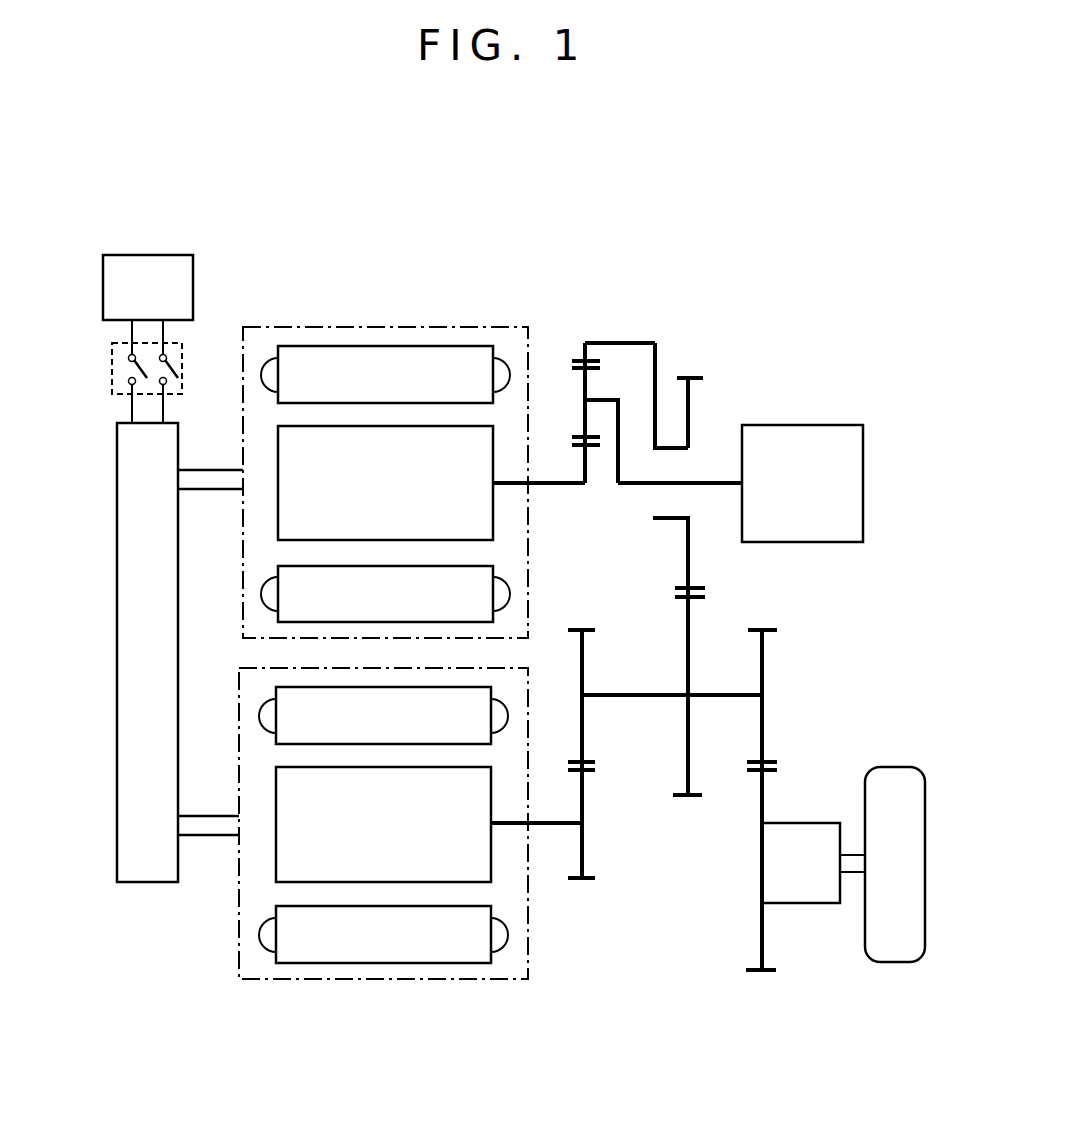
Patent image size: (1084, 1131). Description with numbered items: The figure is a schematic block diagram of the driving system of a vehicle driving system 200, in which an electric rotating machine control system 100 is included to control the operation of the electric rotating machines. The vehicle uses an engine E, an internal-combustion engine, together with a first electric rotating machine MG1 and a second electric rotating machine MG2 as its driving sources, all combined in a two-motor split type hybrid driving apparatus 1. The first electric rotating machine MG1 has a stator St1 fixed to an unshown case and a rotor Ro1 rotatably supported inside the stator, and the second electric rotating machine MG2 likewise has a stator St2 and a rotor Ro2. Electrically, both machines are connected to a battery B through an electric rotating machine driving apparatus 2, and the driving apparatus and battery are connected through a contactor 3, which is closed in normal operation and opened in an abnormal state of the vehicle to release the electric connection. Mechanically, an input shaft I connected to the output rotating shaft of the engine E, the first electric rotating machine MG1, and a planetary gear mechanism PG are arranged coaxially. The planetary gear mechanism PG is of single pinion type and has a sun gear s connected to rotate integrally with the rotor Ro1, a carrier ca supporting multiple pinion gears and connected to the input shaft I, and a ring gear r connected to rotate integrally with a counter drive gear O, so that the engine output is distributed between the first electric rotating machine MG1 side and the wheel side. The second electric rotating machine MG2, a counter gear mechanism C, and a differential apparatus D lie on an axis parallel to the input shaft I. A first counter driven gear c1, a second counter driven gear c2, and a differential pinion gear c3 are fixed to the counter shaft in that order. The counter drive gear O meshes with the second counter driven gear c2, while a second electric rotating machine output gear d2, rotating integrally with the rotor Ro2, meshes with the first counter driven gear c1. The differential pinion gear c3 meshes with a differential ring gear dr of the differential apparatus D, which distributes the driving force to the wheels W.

The hybrid driving apparatus 1 is at (772, 307).
The electric rotating machine driving apparatus 2 is at (117, 515).
The contactor 3 is at (110, 368).
The battery B is at (130, 253).
The vehicle driving system 200 is at (222, 282).
The electric rotating machine control system 100 is at (295, 194).
The first electric rotating machine MG1 is at (415, 327).
The stator St1 is at (368, 350).
The rotor Ro1 is at (287, 455).
The second electric rotating machine MG2 is at (353, 982).
The stator St2 is at (293, 700).
The rotor Ro2 is at (282, 787).
The planetary gear mechanism PG is at (585, 322).
The ring gear r is at (585, 355).
The sun gear s is at (580, 452).
The carrier ca is at (612, 400).
The counter drive gear O is at (690, 402).
The input shaft I is at (707, 481).
The engine E is at (840, 423).
The first counter driven gear c1 is at (582, 660).
The second counter driven gear c2 is at (685, 645).
The differential pinion gear c3 is at (762, 665).
The counter gear mechanism C is at (717, 693).
The second electric rotating machine output gear d2 is at (583, 843).
The differential ring gear dr is at (760, 920).
The differential apparatus D is at (813, 893).
The wheel W is at (905, 777).